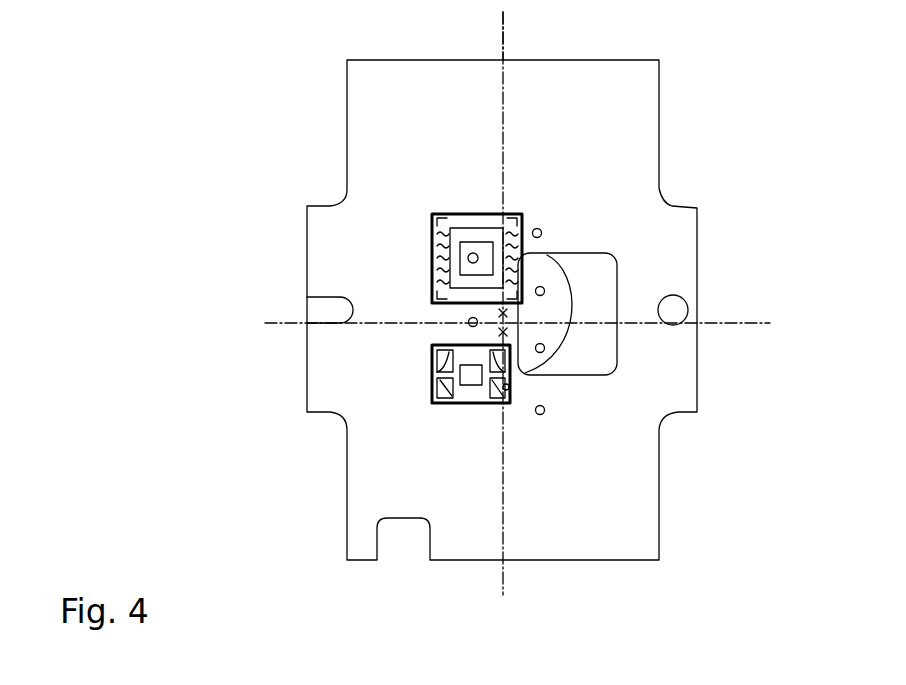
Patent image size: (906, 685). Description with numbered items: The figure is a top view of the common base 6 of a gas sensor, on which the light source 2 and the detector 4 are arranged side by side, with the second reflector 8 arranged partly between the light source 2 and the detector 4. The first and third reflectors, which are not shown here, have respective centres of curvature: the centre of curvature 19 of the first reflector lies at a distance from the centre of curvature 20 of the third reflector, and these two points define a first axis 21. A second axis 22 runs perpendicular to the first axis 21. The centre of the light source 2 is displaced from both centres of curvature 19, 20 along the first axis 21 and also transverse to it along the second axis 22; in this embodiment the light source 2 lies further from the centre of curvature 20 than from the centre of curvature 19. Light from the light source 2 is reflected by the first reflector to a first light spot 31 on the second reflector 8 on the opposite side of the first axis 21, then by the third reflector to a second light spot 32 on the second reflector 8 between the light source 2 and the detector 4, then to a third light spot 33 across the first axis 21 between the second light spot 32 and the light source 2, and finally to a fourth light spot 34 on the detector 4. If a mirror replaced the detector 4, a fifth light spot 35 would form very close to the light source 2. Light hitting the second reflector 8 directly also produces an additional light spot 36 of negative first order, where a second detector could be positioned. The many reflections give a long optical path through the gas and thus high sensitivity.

The light source 2 is at (433, 380).
The detector 4 is at (458, 252).
The common base 6 is at (607, 126).
The second reflector 8 is at (557, 330).
The centre of curvature of the first reflector 19 is at (432, 345).
The centre of curvature of the third reflector 20 is at (499, 312).
The first axis 21 is at (505, 50).
The second axis 22 is at (746, 322).
The first light spot 31 is at (545, 292).
The second light spot 32 is at (468, 318).
The third light spot 33 is at (545, 350).
The fourth light spot 34 is at (475, 253).
The fifth light spot 35 is at (545, 410).
The additional light spot 36 is at (537, 228).